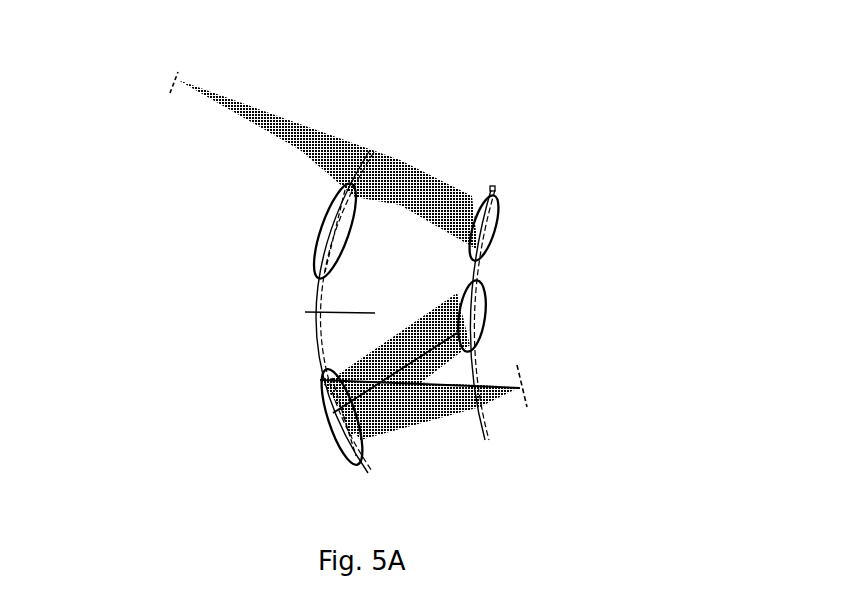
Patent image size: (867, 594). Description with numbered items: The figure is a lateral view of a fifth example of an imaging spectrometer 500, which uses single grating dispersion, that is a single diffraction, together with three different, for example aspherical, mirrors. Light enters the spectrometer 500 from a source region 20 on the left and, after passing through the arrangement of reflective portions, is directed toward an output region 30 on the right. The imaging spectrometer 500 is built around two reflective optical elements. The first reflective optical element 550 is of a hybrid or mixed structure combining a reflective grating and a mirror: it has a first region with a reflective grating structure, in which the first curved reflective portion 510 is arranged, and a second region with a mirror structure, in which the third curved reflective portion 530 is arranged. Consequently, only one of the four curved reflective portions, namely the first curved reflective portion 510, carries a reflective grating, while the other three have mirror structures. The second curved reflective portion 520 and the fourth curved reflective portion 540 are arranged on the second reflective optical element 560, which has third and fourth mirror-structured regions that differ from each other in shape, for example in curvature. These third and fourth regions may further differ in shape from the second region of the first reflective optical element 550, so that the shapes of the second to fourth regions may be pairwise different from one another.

The light source / object point 20 is at (171, 95).
The image / target plane 30 is at (525, 388).
The imaging spectrometer 500 is at (433, 133).
The first curved reflective portion 510 is at (500, 230).
The second curved reflective portion 520 is at (322, 222).
The third curved reflective portion 530 is at (485, 315).
The fourth curved reflective portion 540 is at (327, 425).
The first reflective optical element 550 is at (493, 188).
The second reflective optical element 560 is at (317, 311).